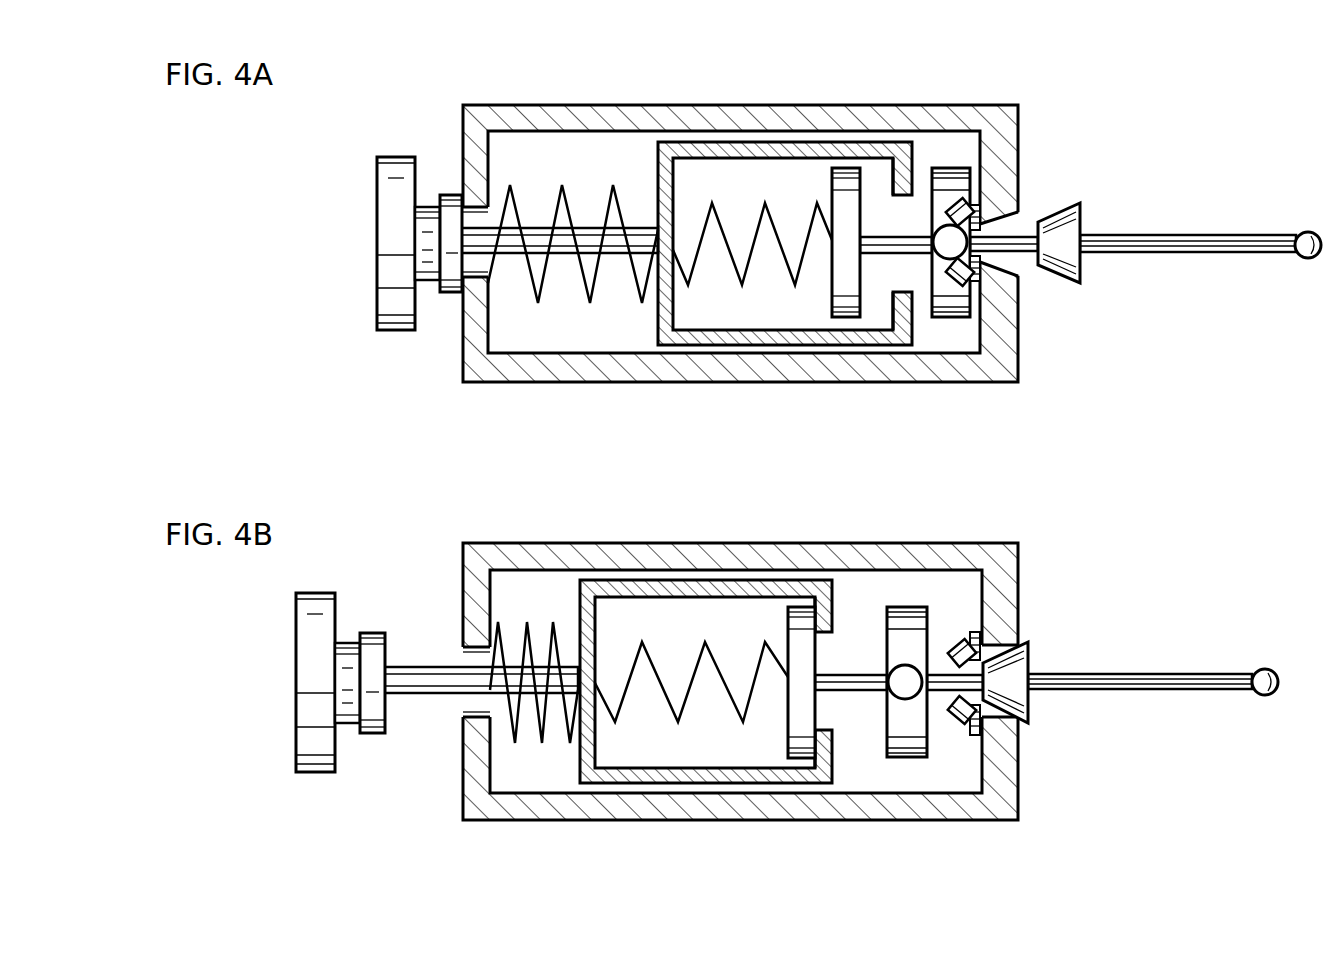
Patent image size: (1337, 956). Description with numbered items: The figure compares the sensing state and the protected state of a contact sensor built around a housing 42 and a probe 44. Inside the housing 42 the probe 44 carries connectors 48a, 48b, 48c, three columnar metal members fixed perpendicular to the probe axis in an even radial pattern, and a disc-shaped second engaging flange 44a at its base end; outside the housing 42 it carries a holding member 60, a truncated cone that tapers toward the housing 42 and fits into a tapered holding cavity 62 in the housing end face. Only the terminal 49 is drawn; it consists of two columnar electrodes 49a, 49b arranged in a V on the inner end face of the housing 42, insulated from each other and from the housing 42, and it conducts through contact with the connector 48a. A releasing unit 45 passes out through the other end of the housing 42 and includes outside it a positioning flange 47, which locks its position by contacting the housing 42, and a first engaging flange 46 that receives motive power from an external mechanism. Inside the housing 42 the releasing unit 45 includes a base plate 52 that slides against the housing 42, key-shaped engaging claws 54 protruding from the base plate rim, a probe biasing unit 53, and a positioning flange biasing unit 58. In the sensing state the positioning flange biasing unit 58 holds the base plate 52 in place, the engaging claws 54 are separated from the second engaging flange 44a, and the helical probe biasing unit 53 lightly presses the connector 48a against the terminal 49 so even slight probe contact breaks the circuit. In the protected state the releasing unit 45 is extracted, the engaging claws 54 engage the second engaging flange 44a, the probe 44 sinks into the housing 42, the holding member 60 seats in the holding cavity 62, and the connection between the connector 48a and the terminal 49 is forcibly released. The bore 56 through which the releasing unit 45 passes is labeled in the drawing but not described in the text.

In FIG. 4A, the housing 42 is at (477, 110).
In FIG. 4B, the housing 42 is at (485, 560).
In FIG. 4A, the probe 44 is at (1162, 255).
In FIG. 4B, the probe 44 is at (1162, 690).
In FIG. 4A, the second engaging flange 44a is at (844, 172).
In FIG. 4B, the second engaging flange 44a is at (800, 612).
In FIG. 4A, the releasing unit 45 is at (388, 245).
In FIG. 4B, the releasing unit 45 is at (300, 683).
In FIG. 4A, the first engaging flange 46 is at (383, 315).
In FIG. 4B, the first engaging flange 46 is at (300, 765).
In FIG. 4A, the positioning flange 47 is at (452, 282).
In FIG. 4B, the positioning flange 47 is at (372, 732).
In FIG. 4A, the connector 48a is at (977, 215).
In FIG. 4B, the connector 48a is at (982, 640).
In FIG. 4A, the connector 48b is at (948, 320).
In FIG. 4B, the connector 48b is at (908, 760).
In FIG. 4A, the connector 48c is at (950, 175).
In FIG. 4B, the connector 48c is at (905, 612).
In FIG. 4A, the terminal 49 is at (952, 238).
In FIG. 4B, the terminal 49 is at (906, 684).
In FIG. 4A, the electrode 49a is at (968, 272).
In FIG. 4B, the electrode 49a is at (985, 722).
In FIG. 4A, the electrode 49b is at (962, 205).
In FIG. 4B, the electrode 49b is at (975, 648).
In FIG. 4A, the base plate 52 is at (658, 318).
In FIG. 4B, the base plate 52 is at (584, 762).
In FIG. 4A, the probe biasing unit 53 is at (755, 268).
In FIG. 4B, the probe biasing unit 53 is at (678, 712).
In FIG. 4A, the engaging claws 54 is at (916, 155).
In FIG. 4B, the engaging claws 54 is at (832, 592).
In FIG. 4A, the bore 56 is at (475, 193).
In FIG. 4B, the bore 56 is at (472, 633).
In FIG. 4A, the positioning flange biasing unit 58 is at (517, 190).
In FIG. 4B, the positioning flange biasing unit 58 is at (515, 745).
In FIG. 4A, the holding member 60 is at (1085, 215).
In FIG. 4B, the holding member 60 is at (1032, 658).
In FIG. 4A, the holding cavity 62 is at (1007, 258).
In FIG. 4B, the holding cavity 62 is at (1035, 712).